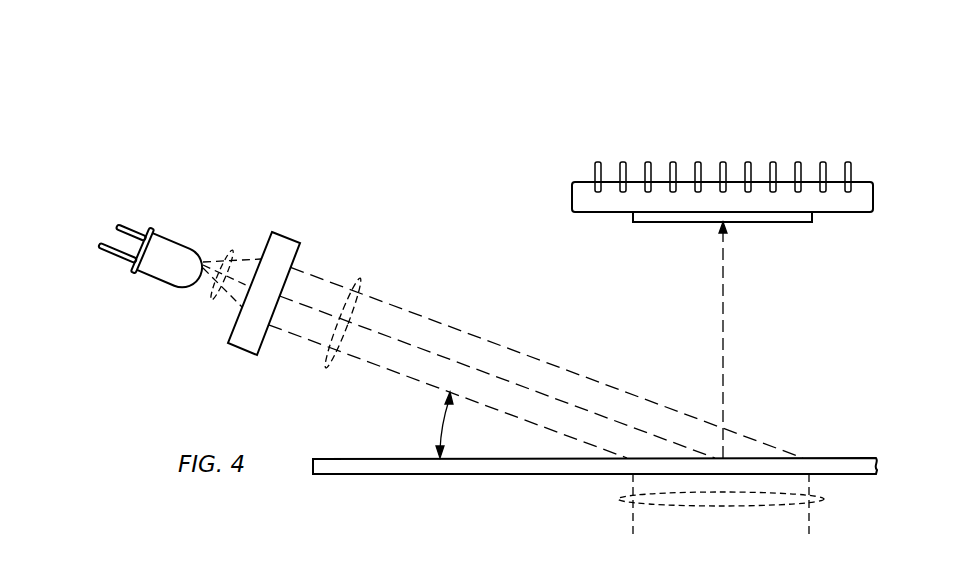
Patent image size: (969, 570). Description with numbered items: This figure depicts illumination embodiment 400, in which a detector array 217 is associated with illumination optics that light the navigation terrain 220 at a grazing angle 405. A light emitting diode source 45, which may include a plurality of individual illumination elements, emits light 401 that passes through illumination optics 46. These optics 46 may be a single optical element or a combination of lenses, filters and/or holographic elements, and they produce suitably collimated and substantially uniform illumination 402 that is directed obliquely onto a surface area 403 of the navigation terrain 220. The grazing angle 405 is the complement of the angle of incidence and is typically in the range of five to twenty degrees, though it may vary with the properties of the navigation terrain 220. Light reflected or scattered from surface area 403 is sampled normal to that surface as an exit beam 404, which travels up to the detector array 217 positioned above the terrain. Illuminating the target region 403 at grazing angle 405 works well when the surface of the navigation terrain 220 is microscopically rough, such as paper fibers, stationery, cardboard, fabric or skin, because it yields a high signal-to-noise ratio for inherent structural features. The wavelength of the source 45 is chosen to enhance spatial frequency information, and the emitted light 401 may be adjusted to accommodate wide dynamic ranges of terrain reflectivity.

The light emitting diode 45 is at (175, 240).
The illumination optics 46 is at (287, 232).
The light emitted by source 401 is at (212, 300).
The collimated substantially uniform illumination 402 is at (362, 276).
The illumination embodiment 400 is at (415, 147).
The detector array 217 is at (573, 192).
The navigation terrain 220 is at (345, 458).
The surface area 403 is at (737, 506).
The exit beam 404 is at (723, 348).
The grazing angle 405 is at (443, 426).